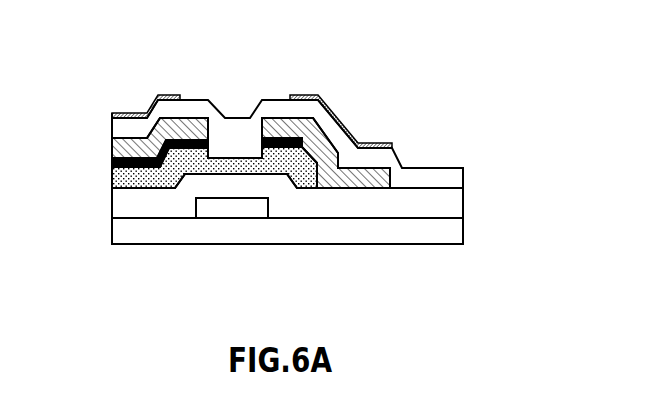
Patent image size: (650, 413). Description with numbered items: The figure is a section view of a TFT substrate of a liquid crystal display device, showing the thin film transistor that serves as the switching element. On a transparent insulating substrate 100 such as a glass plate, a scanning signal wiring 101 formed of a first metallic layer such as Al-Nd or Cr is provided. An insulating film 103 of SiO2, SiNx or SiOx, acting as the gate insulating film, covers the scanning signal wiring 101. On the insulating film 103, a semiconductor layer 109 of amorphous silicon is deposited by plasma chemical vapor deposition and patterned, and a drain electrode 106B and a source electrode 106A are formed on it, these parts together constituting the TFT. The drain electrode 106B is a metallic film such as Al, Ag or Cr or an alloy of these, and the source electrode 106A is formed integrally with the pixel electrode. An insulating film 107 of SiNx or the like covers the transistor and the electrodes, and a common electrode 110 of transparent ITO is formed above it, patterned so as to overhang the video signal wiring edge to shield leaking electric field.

The transparent insulating substrate 100 is at (452, 231).
The scanning signal wiring 101 is at (225, 205).
The insulating film 103 is at (453, 204).
The source electrode 106A is at (327, 138).
The drain electrode 106B is at (172, 125).
The insulating film 107 is at (461, 178).
The semiconductor layer 109 is at (107, 158).
The common electrode 110 is at (317, 115).